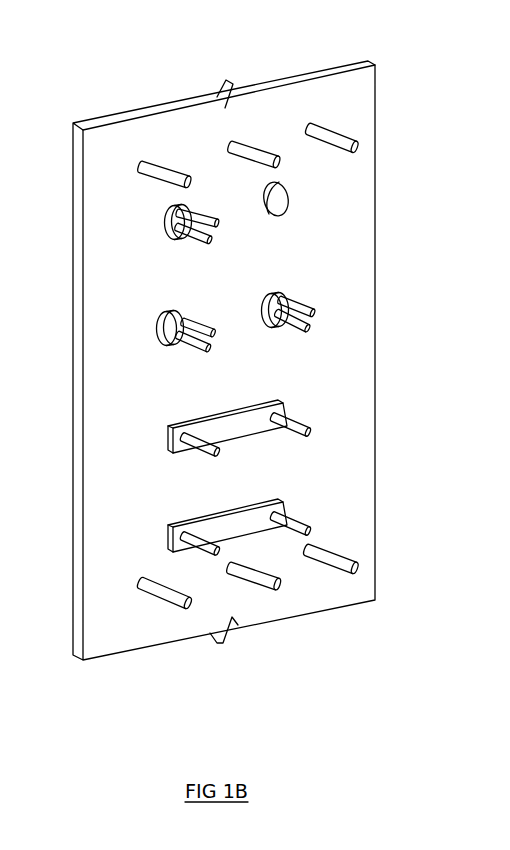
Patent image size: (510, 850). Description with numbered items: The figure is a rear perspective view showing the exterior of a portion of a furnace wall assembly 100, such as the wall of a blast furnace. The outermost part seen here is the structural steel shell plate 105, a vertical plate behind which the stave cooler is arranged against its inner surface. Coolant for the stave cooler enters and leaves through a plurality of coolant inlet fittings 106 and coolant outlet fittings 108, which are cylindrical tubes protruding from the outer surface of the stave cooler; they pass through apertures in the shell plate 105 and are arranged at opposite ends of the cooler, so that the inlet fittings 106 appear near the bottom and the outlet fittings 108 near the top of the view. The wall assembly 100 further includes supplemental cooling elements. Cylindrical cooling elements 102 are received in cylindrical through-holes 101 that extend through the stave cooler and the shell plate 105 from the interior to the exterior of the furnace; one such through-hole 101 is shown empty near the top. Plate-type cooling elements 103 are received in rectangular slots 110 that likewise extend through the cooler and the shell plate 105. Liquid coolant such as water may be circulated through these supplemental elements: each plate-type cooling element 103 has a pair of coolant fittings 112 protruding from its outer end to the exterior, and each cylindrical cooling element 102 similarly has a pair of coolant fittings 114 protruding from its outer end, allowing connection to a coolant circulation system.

The furnace wall assembly 100 is at (102, 80).
The cylindrical through-hole 101 is at (278, 192).
The cylindrical cooling element 102 is at (280, 295).
The plate-type cooling element 103 is at (230, 428).
The shell plate 105 is at (90, 635).
The coolant inlet fitting 106 is at (343, 560).
The coolant outlet fitting 108 is at (331, 137).
The rectangular slot 110 is at (232, 413).
The coolant fitting of plate-type cooler 112 is at (215, 448).
The coolant fitting of cylindrical cooling element 114 is at (197, 220).